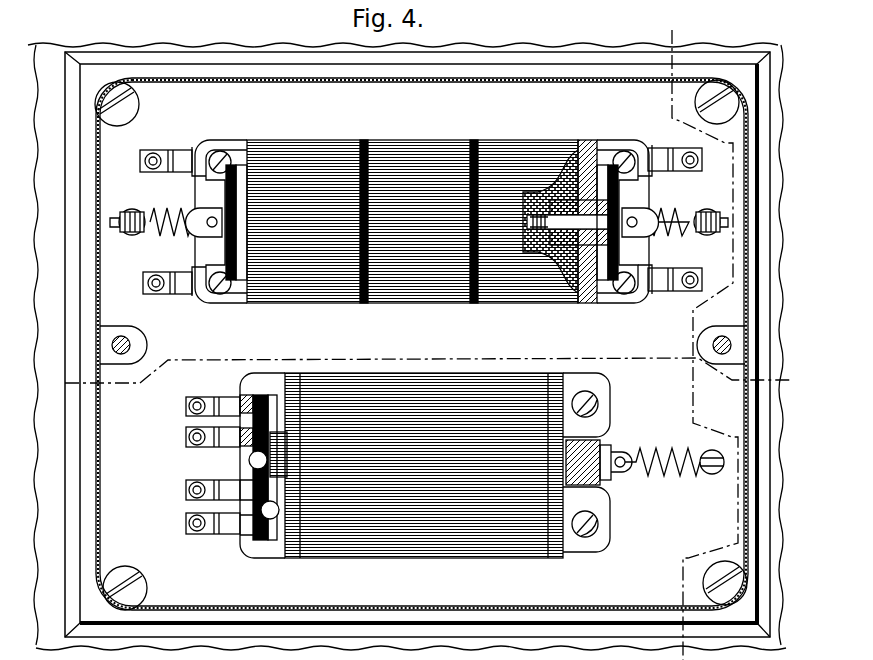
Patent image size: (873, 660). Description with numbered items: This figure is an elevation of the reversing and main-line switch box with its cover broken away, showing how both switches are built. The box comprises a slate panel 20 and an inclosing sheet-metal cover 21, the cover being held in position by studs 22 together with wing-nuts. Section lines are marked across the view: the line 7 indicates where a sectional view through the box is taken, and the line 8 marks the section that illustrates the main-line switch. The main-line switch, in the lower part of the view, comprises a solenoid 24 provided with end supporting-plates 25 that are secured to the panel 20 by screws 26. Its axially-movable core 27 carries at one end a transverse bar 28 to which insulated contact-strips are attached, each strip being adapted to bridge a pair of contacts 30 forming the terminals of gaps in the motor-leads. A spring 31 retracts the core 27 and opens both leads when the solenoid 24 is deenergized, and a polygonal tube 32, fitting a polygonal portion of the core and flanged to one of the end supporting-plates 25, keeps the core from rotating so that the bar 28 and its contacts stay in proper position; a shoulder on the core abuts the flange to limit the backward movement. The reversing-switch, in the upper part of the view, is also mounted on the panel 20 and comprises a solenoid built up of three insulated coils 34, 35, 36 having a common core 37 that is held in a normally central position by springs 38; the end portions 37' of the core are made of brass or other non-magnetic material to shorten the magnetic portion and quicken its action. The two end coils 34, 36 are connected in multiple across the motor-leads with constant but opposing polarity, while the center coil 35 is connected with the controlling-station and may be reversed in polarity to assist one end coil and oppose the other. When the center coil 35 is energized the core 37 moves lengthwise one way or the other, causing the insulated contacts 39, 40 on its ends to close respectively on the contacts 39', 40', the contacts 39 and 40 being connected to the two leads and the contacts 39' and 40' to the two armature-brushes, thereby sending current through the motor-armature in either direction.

The section line 7 7 is at (701, 334).
The section line 8 8 is at (427, 376).
The slate panel 20 is at (417, 344).
The sheet-metal cover 21 is at (238, 612).
The stud 22 is at (134, 344).
The solenoid 24 is at (424, 465).
The end supporting-plate 25 is at (292, 374).
The screw 26 is at (601, 405).
The core 27 is at (288, 455).
The transverse bar 28 is at (262, 525).
The contact 30 is at (200, 465).
The spring 31 is at (653, 450).
The polygonal tube 32 is at (596, 448).
The end coil 34 is at (305, 152).
The center coil 35 is at (418, 150).
The end coil 36 is at (527, 152).
The common core 37 is at (552, 211).
The end portion of core 37' is at (558, 272).
The spring 38 is at (167, 215).
The insulated contact 39 is at (219, 211).
The contact 39' is at (424, 146).
The insulated contact 40 is at (430, 233).
The contact 40' is at (422, 292).